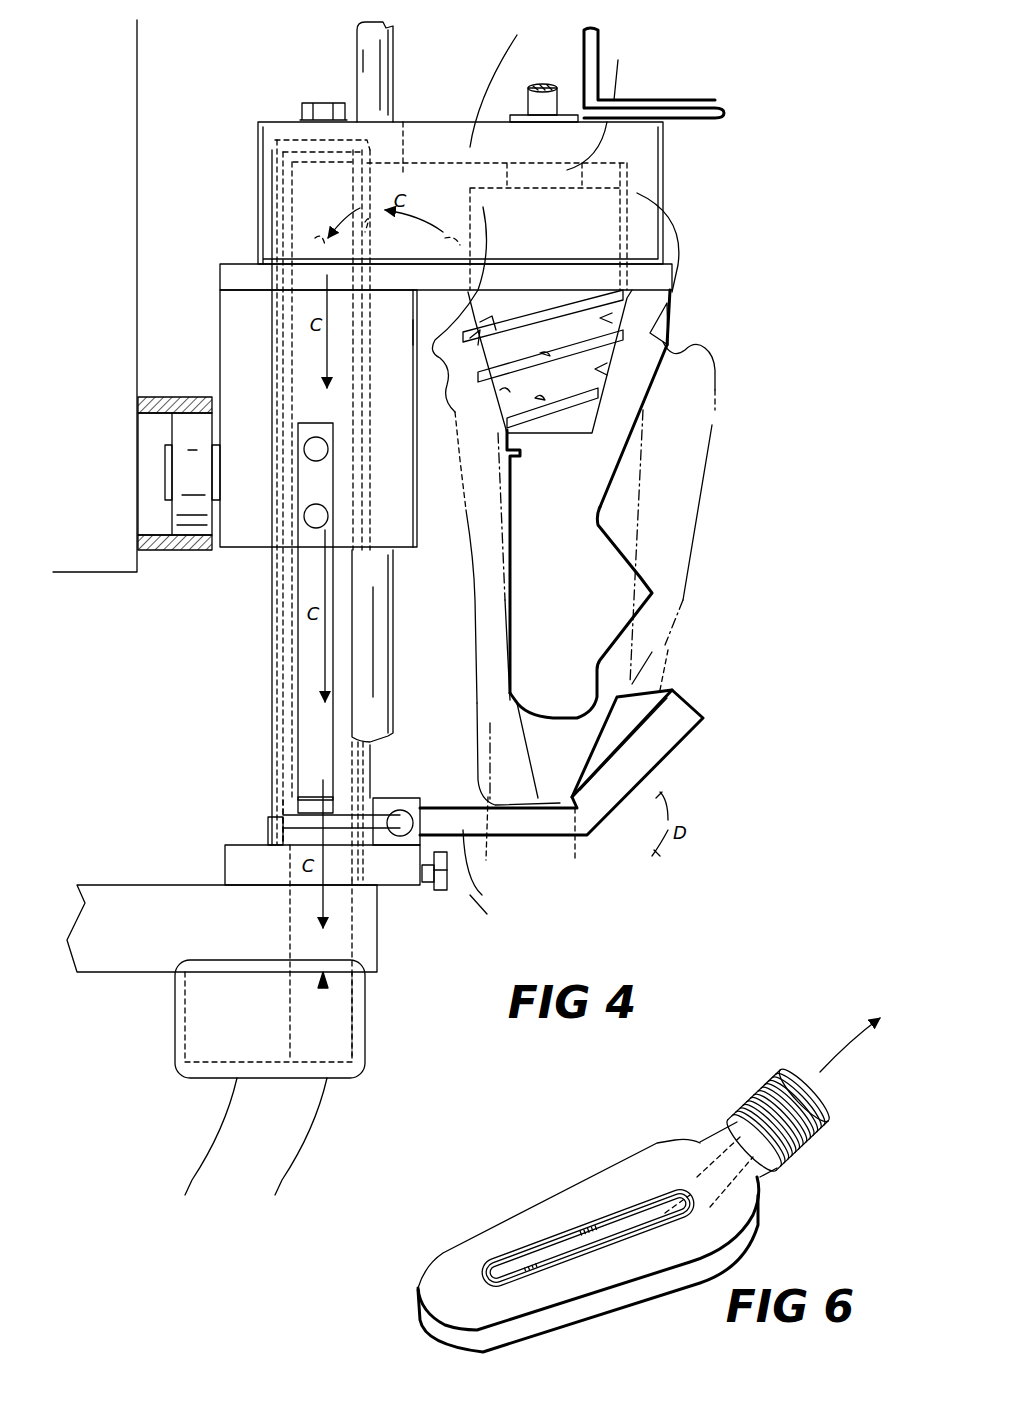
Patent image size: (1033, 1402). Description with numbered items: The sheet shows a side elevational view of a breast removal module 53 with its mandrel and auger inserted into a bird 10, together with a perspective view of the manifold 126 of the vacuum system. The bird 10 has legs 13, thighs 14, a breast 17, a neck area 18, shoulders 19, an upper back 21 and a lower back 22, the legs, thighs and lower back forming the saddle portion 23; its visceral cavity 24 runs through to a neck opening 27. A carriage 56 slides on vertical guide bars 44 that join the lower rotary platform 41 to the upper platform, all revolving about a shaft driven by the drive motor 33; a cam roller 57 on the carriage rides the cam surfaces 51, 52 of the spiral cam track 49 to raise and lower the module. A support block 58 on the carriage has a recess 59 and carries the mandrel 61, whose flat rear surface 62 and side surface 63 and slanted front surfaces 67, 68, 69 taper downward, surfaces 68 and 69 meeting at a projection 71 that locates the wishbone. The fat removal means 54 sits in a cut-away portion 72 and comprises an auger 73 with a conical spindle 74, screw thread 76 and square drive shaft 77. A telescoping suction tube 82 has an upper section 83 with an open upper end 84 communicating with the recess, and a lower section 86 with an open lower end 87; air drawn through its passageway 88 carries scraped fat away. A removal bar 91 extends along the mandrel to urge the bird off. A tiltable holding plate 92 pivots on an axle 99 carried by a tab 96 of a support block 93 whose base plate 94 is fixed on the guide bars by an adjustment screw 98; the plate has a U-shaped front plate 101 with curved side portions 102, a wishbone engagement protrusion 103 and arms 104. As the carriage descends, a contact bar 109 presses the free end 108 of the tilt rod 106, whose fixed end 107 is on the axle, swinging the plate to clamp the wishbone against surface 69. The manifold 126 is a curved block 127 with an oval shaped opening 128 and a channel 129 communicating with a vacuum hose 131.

In FIG. 4, the bird 10 is at (745, 452).
In FIG. 4, the legs 13 is at (622, 85).
In FIG. 4, the thighs 14 is at (680, 220).
In FIG. 4, the breast 17 is at (709, 557).
In FIG. 4, the neck area 18 is at (577, 847).
In FIG. 4, the shoulders 19 is at (486, 848).
In FIG. 4, the upper back 21 is at (472, 678).
In FIG. 4, the lower back 22 is at (454, 455).
In FIG. 4, the saddle portion 23 is at (672, 200).
In FIG. 4, the visceral cavity 24 is at (645, 500).
In FIG. 4, the neck opening 27 is at (633, 686).
In FIG. 4, the drive motor 33 is at (96, 299).
In FIG. 4, the lower rotary platform 41 is at (148, 895).
In FIG. 4, the vertical guide bars 44 is at (356, 66).
In FIG. 4, the spiral cam track 49 is at (158, 470).
In FIG. 4, the cam surface 51 is at (152, 396).
In FIG. 4, the cam surface 52 is at (160, 551).
In FIG. 4, the breast removal module 53 is at (490, 916).
In FIG. 4, the fat removal means 54 is at (670, 342).
In FIG. 4, the carriage 56 is at (238, 336).
In FIG. 4, the cam roller 57 is at (190, 425).
In FIG. 4, the support block 58 is at (453, 130).
In FIG. 4, the recess 59 is at (403, 122).
In FIG. 4, the mandrel 61 is at (646, 504).
In FIG. 4, the rear surface 62 is at (508, 615).
In FIG. 4, the side surface 63 is at (512, 706).
In FIG. 4, the slanted front surface 67 is at (698, 365).
In FIG. 4, the slanted front surface 68 is at (632, 560).
In FIG. 4, the slanted front surface 69 is at (655, 625).
In FIG. 4, the projection 71 is at (675, 590).
In FIG. 4, the cut-away portion 72 is at (539, 361).
In FIG. 4, the auger 73 is at (668, 302).
In FIG. 4, the spindle 74 is at (482, 298).
In FIG. 4, the screw thread 76 is at (430, 352).
In FIG. 4, the square drive shaft 77 is at (552, 95).
In FIG. 4, the telescoping suction tube 82 is at (272, 205).
In FIG. 4, the upper section 83 is at (272, 648).
In FIG. 4, the open upper end 84 is at (300, 138).
In FIG. 4, the lower section 86 is at (283, 750).
In FIG. 4, the open lower end 87 is at (322, 975).
In FIG. 4, the passageway 88 is at (348, 920).
In FIG. 4, the removal bar 91 is at (688, 80).
In FIG. 4, the tiltable holding plate 92 is at (708, 762).
In FIG. 4, the support block 93 is at (220, 845).
In FIG. 4, the base plate 94 is at (224, 873).
In FIG. 4, the tab 96 is at (418, 800).
In FIG. 4, the adjustment screw 98 is at (445, 892).
In FIG. 4, the axle 99 is at (402, 810).
In FIG. 4, the front plate 101 is at (599, 762).
In FIG. 4, the curved side portions 102 is at (645, 768).
In FIG. 4, the wishbone engagement protrusion 103 is at (616, 723).
In FIG. 4, the arms 104 is at (490, 869).
In FIG. 4, the tilt rod 106 is at (296, 800).
In FIG. 4, the fixed end 107 is at (392, 812).
In FIG. 4, the free end 108 is at (262, 830).
In FIG. 4, the contact bar 109 is at (308, 476).
In FIG. 4, the manifold 126 is at (287, 1042).
In FIG. 6, the manifold 126 is at (570, 1244).
In FIG. 4, the curved block 127 is at (174, 1023).
In FIG. 6, the curved block 127 is at (437, 1255).
In FIG. 4, the oval shaped opening 128 is at (323, 985).
In FIG. 6, the oval shaped opening 128 is at (602, 1230).
In FIG. 4, the channel 129 is at (208, 1045).
In FIG. 6, the channel 129 is at (672, 1205).
In FIG. 4, the vacuum hose 131 is at (310, 1100).
In FIG. 6, the vacuum hose 131 is at (765, 1090).